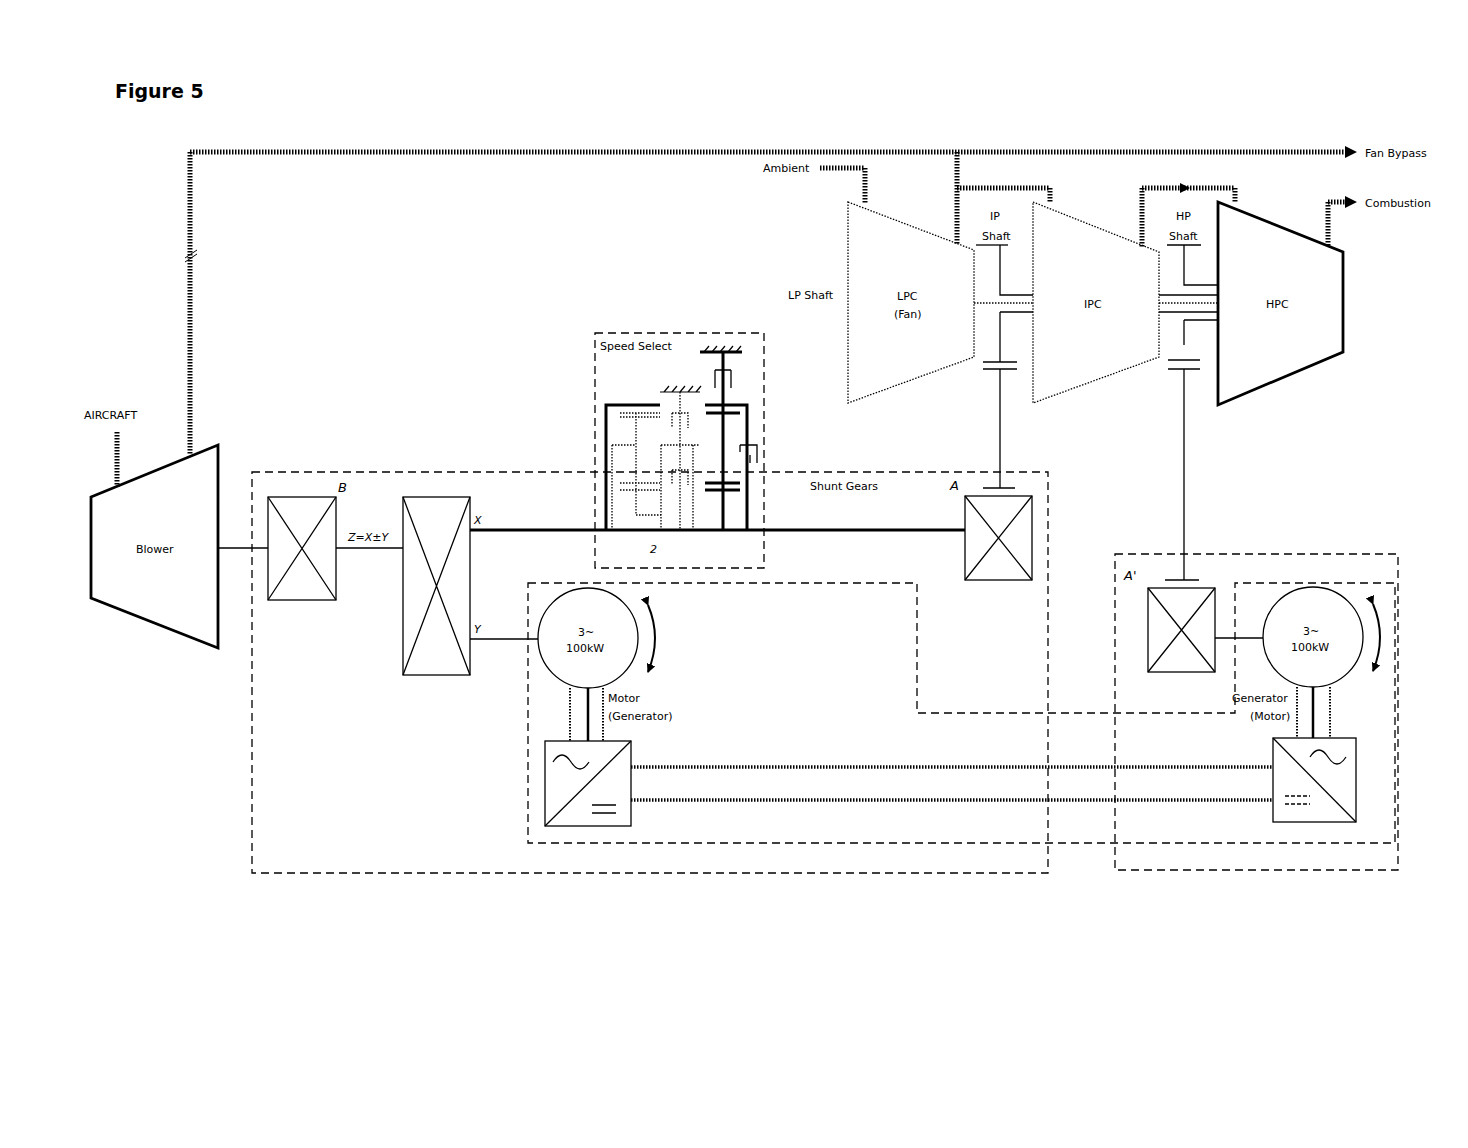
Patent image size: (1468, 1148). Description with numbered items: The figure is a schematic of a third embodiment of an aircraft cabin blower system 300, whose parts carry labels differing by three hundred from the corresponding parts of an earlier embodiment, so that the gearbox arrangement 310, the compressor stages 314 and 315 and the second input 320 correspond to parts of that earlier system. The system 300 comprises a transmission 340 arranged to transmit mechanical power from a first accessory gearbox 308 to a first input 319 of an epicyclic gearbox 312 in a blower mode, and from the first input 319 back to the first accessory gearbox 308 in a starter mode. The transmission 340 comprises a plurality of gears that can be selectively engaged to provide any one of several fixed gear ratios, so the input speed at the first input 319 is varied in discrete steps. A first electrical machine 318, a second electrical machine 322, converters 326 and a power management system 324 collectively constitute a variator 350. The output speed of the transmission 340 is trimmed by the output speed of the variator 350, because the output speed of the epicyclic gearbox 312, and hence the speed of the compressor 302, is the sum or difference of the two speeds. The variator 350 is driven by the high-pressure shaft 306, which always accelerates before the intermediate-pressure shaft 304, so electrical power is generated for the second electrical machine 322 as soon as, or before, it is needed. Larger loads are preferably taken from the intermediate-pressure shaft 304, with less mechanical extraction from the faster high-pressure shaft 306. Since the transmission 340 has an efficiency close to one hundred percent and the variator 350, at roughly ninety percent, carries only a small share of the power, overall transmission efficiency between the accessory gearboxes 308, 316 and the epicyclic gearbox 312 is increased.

The aircraft cabin blower system 300 is at (1169, 105).
The compressor 302 is at (175, 485).
The intermediate-pressure shaft 304 is at (998, 340).
The high-pressure shaft 306 is at (1183, 343).
The first accessory gearbox 308 is at (998, 570).
The gearbox arrangement 310 is at (315, 623).
The epicyclic gearbox 312 is at (425, 673).
The intermediate pressure compressor 314 is at (1055, 243).
The high pressure compressor 315 is at (1327, 338).
The second accessory gearbox 316 is at (1180, 655).
The first electrical machine 318 is at (1315, 600).
The first input 319 is at (492, 530).
The second input shaft Y 320 is at (493, 642).
The second electrical machine 322 is at (579, 600).
The power management system 324 is at (1228, 822).
The converters 326 is at (575, 815).
The transmission 340 is at (702, 333).
The variator 350 is at (680, 845).